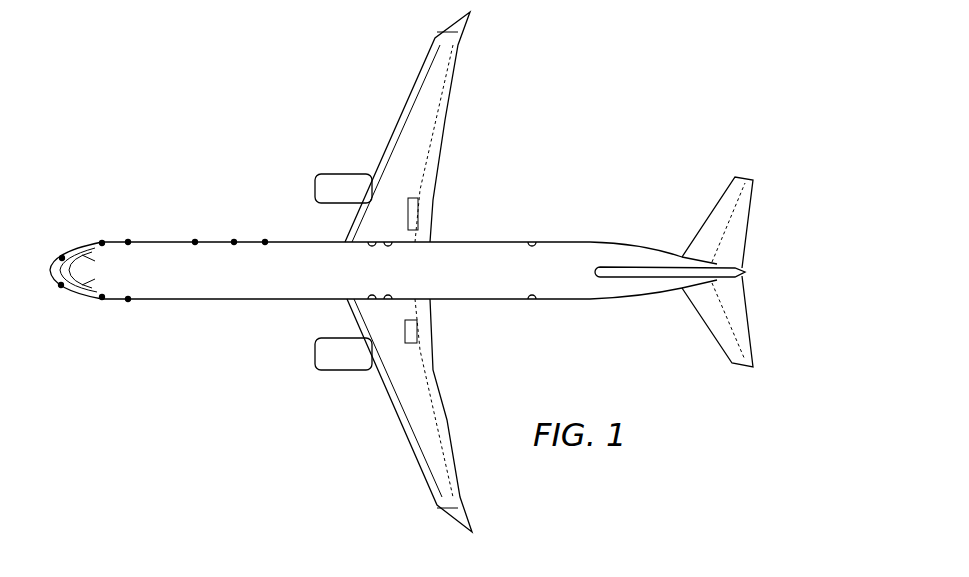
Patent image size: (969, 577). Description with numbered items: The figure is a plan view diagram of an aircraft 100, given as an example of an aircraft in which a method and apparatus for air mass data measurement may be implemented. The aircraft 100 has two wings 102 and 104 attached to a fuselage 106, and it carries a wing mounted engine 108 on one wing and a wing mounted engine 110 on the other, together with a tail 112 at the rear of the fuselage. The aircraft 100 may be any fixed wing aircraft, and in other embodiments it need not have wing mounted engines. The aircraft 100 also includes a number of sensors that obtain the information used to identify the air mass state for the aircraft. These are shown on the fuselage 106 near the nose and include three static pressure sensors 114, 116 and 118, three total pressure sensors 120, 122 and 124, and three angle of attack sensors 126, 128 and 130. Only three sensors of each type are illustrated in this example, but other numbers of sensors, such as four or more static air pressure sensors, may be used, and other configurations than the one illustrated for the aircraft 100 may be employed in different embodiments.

The aircraft 100 is at (412, 272).
The wing 102 is at (412, 88).
The wing 104 is at (410, 450).
The fuselage 106 is at (488, 242).
The wing mounted engine 108 is at (333, 172).
The wing mounted engine 110 is at (315, 356).
The tail 112 is at (742, 225).
The static pressure sensor 114 is at (195, 242).
The static pressure sensor 116 is at (234, 242).
The static pressure sensor 118 is at (265, 242).
The total pressure sensor 120 is at (102, 242).
The total pressure sensor 122 is at (62, 256).
The total pressure sensor 124 is at (60, 287).
The angle of attack sensor 126 is at (128, 242).
The angle of attack sensor 128 is at (128, 300).
The angle of attack sensor 130 is at (102, 298).